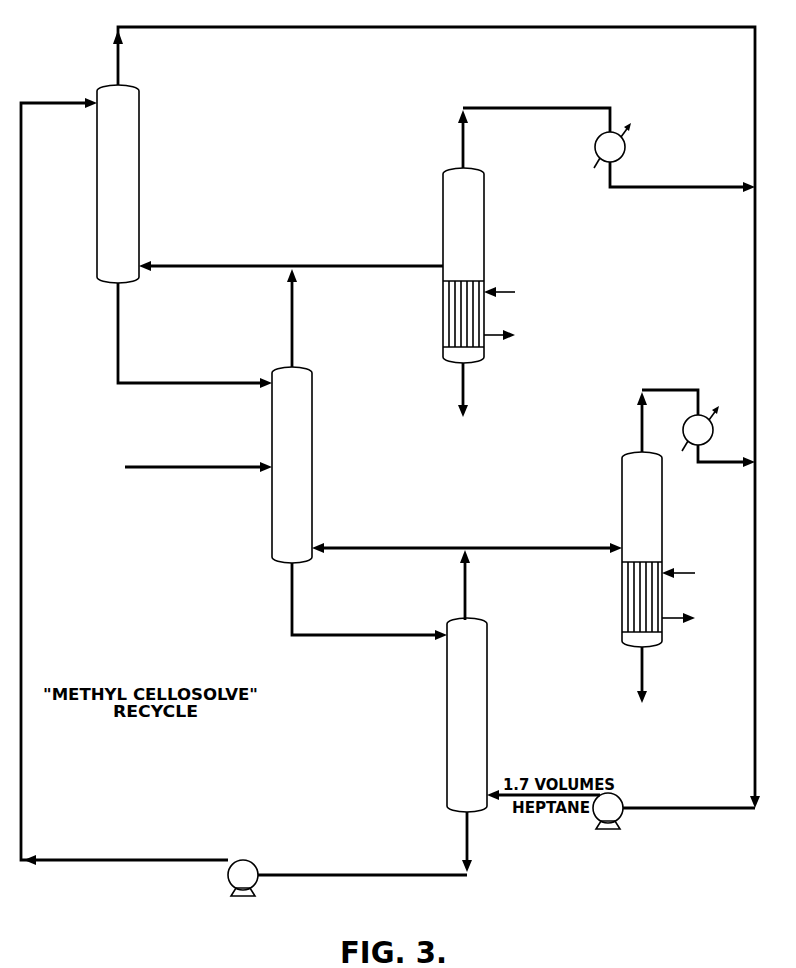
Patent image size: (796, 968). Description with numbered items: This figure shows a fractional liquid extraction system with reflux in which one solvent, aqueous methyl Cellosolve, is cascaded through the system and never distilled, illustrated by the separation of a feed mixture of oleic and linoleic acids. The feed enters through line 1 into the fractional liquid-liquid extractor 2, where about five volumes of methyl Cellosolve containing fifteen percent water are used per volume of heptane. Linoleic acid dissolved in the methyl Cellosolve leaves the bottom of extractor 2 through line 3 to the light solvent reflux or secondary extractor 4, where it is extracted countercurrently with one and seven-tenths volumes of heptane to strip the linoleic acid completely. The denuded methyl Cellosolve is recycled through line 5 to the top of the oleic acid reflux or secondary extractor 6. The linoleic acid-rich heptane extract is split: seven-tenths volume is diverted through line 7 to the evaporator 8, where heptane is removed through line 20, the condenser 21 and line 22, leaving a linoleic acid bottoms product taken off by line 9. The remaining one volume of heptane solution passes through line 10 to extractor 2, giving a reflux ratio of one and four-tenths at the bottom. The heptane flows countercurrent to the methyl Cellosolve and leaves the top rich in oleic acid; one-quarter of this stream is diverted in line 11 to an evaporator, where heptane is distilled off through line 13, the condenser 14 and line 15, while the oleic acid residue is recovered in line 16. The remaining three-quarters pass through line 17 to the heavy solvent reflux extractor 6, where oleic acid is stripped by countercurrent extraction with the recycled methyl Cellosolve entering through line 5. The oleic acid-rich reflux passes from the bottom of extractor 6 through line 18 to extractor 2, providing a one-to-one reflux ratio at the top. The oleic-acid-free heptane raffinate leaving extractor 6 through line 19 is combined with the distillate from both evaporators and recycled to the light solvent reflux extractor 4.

The line 1 is at (198, 476).
The fractional liquid-liquid extractor 2 is at (286, 479).
The line 3 is at (369, 601).
The light solvent reflux or secondary extractor 4 is at (461, 721).
The line 5 is at (124, 475).
The oleic acid reflux or secondary extractor 6 is at (112, 186).
The line 7 is at (543, 549).
The evaporator 8 is at (636, 529).
The line 9 is at (641, 698).
The line 10 is at (391, 574).
The line 11 is at (365, 307).
The line 13 is at (534, 128).
The condenser 14 is at (623, 145).
The line 15 is at (682, 185).
The line 16 is at (464, 409).
The line 17 is at (215, 267).
The line 18 is at (148, 345).
The line 19 is at (436, 405).
The line 20 is at (667, 411).
The condenser 21 is at (712, 428).
The line 22 is at (726, 465).